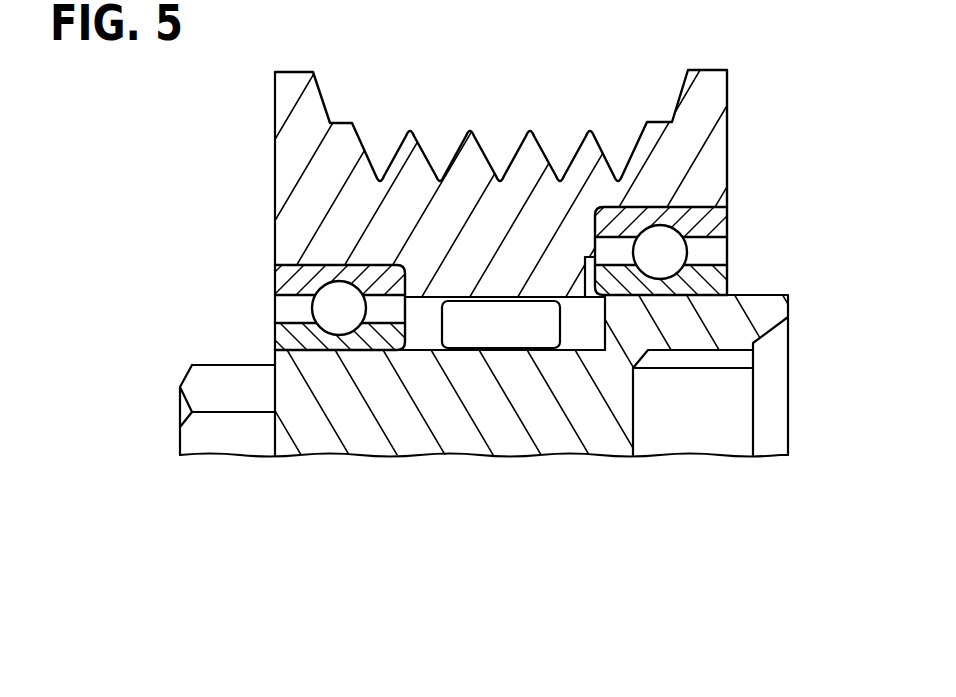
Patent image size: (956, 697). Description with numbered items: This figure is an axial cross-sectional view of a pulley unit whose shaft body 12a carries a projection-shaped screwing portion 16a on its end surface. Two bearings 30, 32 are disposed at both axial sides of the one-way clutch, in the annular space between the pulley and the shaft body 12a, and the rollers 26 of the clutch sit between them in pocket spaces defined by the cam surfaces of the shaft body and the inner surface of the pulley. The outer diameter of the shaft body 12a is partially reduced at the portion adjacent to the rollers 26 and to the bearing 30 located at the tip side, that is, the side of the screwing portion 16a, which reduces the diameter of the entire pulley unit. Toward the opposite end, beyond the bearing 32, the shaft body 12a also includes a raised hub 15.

The shaft body 12a is at (463, 438).
The raised hub 15 is at (767, 312).
The projection-shaped screwing portion 16a is at (213, 378).
The roller 26 is at (475, 312).
The bearing 30 is at (275, 267).
The bearing 32 is at (674, 218).